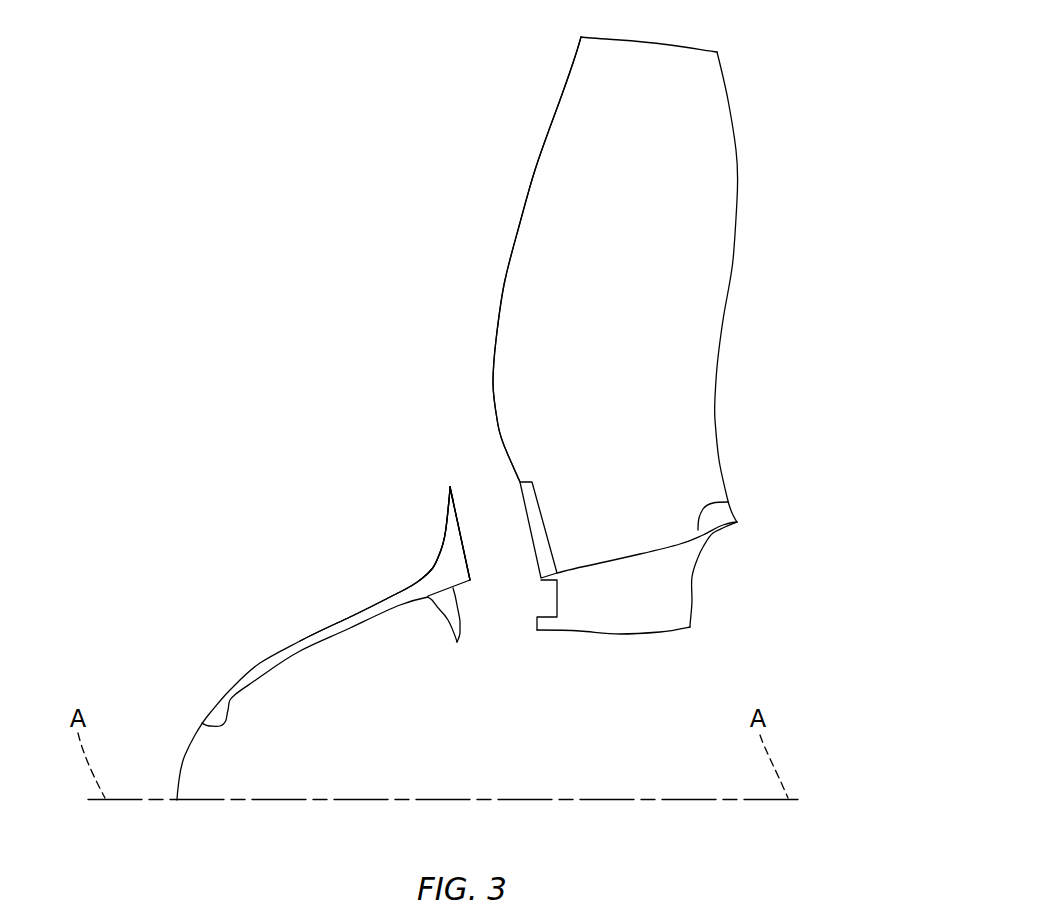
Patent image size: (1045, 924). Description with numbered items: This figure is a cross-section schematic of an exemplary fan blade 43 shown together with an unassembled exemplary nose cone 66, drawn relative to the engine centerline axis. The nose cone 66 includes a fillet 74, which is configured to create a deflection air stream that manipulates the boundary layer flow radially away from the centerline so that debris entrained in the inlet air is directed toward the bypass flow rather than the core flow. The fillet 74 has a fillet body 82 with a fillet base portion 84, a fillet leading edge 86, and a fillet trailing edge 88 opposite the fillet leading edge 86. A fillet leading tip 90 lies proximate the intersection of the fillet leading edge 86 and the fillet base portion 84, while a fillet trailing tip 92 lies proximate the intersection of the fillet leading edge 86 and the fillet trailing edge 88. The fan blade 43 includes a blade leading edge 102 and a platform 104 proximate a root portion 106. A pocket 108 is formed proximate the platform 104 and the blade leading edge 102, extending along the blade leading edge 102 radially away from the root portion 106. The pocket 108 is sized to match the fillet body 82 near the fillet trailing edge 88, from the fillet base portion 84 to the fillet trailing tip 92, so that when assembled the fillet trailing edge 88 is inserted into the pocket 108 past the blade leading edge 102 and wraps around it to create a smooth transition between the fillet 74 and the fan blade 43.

The fan blade 43 is at (615, 272).
The blade leading edge 102 is at (503, 292).
The platform 104 is at (730, 500).
The root portion 106 is at (650, 608).
The pocket 108 is at (532, 513).
The nose cone 66 is at (182, 763).
The fillet 74 is at (412, 532).
The fillet body 82 is at (423, 464).
The fillet base portion 84 is at (457, 590).
The fillet leading edge 86 is at (438, 562).
The fillet trailing edge 88 is at (477, 556).
The fillet leading tip 90 is at (394, 582).
The fillet trailing tip 92 is at (450, 487).